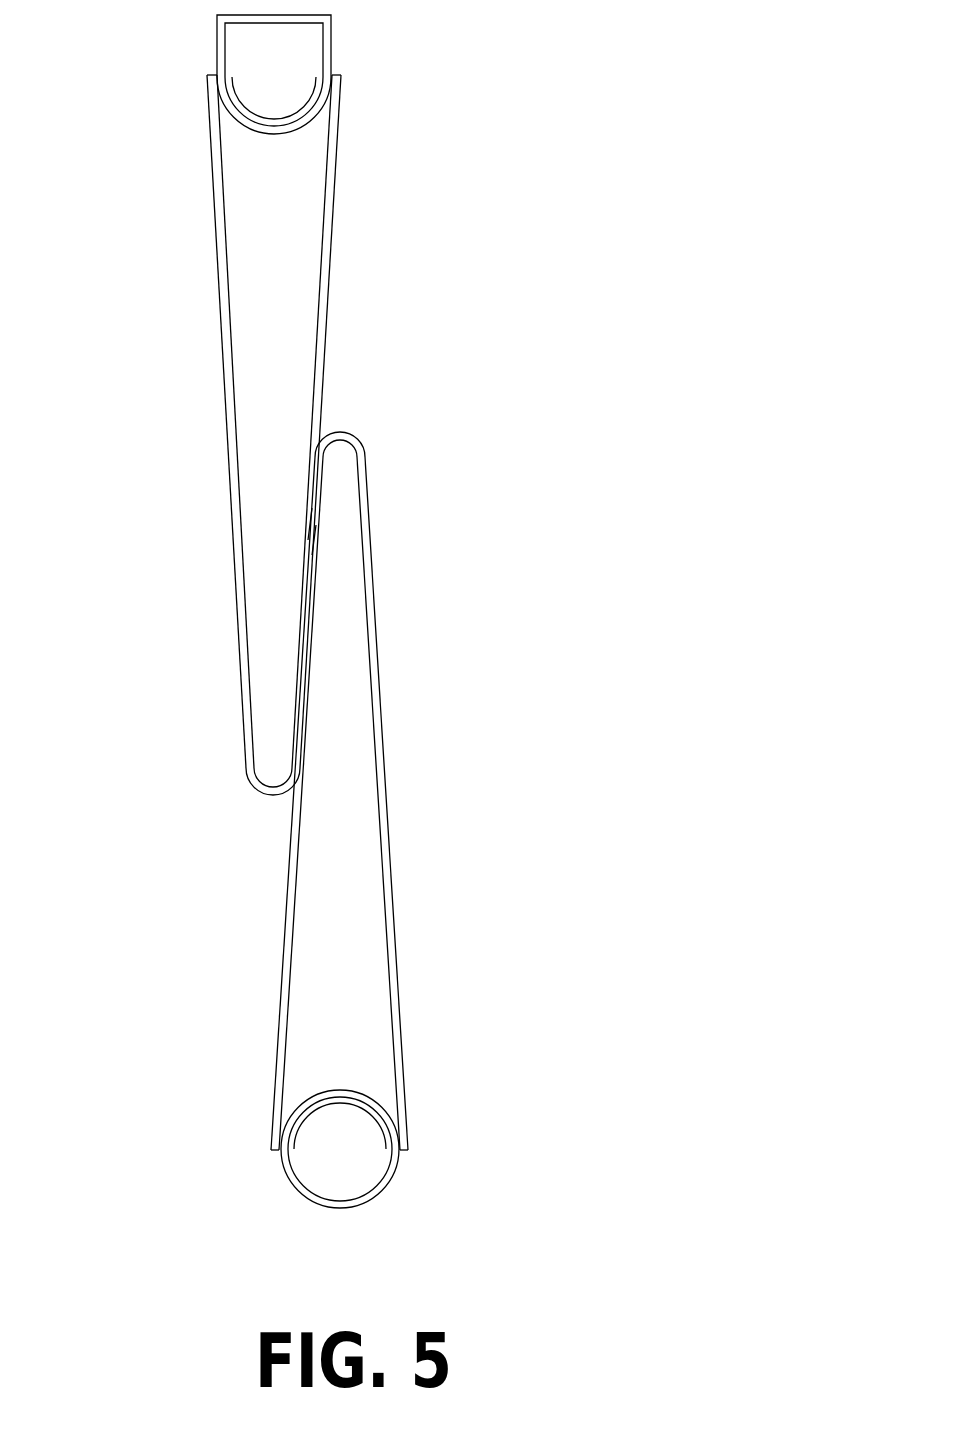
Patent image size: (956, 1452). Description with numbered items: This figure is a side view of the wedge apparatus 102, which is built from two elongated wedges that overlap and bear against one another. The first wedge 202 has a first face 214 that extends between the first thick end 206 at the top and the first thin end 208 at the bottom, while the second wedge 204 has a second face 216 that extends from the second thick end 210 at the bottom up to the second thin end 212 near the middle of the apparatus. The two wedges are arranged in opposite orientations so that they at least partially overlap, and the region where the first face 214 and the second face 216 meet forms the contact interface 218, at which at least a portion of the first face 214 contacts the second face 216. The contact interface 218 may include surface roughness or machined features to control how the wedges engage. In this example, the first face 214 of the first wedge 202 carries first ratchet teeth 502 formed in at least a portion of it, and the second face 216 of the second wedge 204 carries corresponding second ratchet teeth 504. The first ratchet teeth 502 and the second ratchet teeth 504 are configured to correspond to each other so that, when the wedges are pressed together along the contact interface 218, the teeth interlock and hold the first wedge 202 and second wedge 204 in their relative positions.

The wedge apparatus 102 is at (562, 90).
The first wedge 202 is at (220, 295).
The second wedge 204 is at (397, 972).
The first thick end 206 is at (195, 89).
The first thin end 208 is at (229, 766).
The second thick end 210 is at (417, 1150).
The second thin end 212 is at (379, 464).
The first face 214 is at (332, 237).
The second face 216 is at (280, 1005).
The contact interface 218 is at (326, 427).
The first ratchet teeth 502 is at (311, 513).
The second ratchet teeth 504 is at (317, 528).